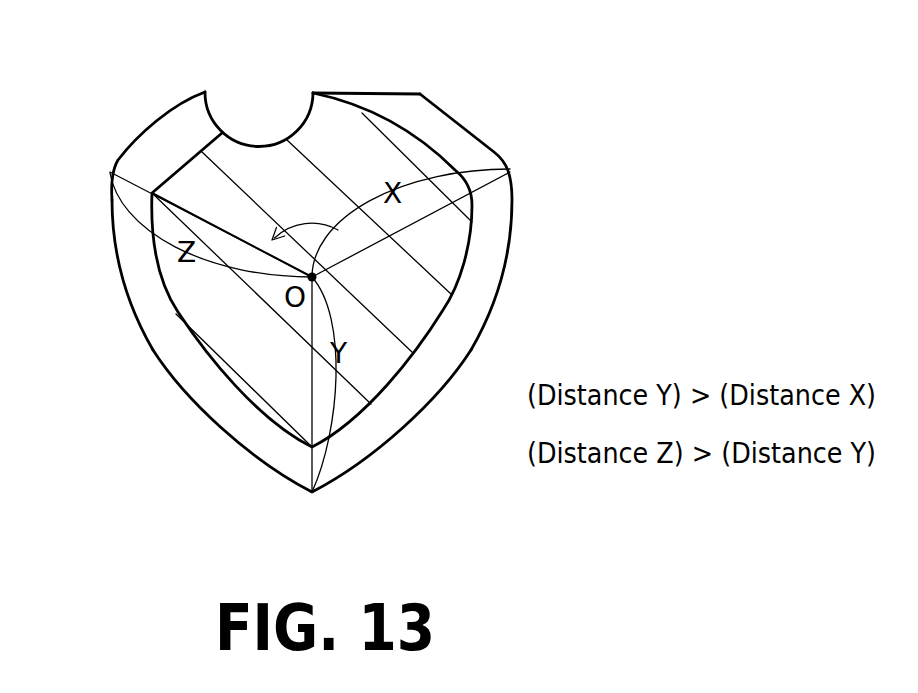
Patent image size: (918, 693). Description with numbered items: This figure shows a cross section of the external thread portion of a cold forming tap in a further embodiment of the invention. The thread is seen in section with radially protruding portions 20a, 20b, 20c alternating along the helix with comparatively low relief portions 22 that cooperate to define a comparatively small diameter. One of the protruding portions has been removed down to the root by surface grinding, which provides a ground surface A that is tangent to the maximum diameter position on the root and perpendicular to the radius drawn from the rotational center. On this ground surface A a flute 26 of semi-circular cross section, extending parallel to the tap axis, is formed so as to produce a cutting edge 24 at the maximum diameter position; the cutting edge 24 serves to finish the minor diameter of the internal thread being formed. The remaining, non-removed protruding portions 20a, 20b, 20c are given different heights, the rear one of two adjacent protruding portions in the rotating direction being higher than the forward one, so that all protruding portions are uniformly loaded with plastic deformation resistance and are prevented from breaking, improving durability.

The first corner of shield-shaped recess 20a is at (545, 171).
The second corner of shield-shaped recess 20b is at (325, 521).
The third corner of shield-shaped recess 20c is at (84, 169).
The relief portion 22 is at (130, 370).
The cutting edge 24 is at (311, 92).
The flute 26 is at (263, 142).
The ground surface A is at (395, 93).